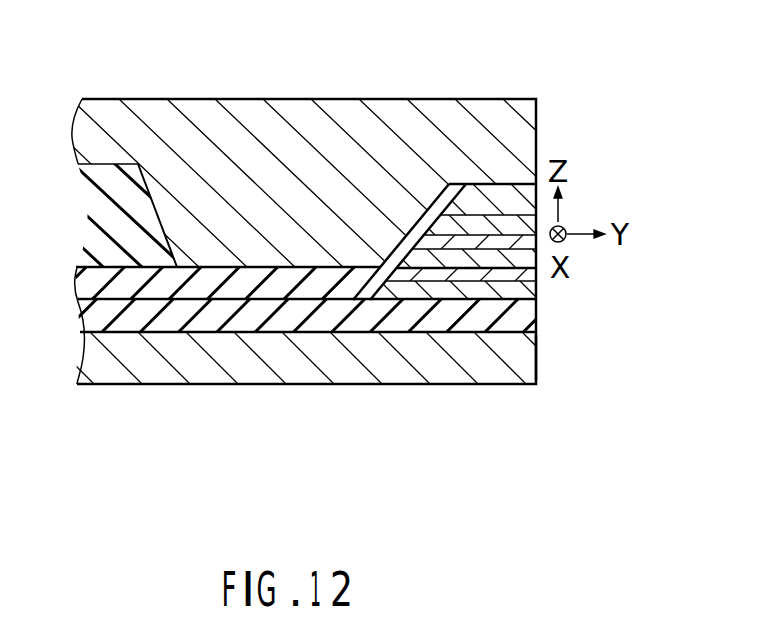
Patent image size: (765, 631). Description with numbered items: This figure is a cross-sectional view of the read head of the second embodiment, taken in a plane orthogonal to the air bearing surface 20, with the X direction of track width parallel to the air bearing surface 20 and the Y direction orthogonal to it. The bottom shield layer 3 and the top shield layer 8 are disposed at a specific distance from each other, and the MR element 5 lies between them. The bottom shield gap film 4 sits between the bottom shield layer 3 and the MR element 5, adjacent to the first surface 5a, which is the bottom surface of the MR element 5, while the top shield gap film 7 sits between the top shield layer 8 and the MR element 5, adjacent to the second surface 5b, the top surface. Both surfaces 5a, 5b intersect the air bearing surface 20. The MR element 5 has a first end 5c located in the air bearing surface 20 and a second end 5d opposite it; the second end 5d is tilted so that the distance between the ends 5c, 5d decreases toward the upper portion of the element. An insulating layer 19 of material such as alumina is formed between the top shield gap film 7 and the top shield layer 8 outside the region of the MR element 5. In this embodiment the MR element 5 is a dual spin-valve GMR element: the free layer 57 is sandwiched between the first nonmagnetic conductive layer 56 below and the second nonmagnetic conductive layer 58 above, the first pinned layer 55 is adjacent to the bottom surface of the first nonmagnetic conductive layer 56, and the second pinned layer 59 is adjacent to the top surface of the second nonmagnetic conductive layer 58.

The bottom shield layer 3 is at (142, 368).
The bottom shield gap film 4 is at (207, 326).
The MR element 5 is at (492, 213).
The first surface 5a is at (536, 352).
The second surface 5b is at (510, 215).
The first end 5c is at (538, 288).
The second end 5d is at (365, 222).
The top shield gap film 7 is at (207, 272).
The top shield layer 8 is at (263, 100).
The insulating layer 19 is at (105, 170).
The air bearing surface 20 is at (537, 127).
The first pinned layer 55 is at (389, 291).
The first nonmagnetic conductive layer 56 is at (430, 276).
The free layer 57 is at (481, 260).
The second nonmagnetic conductive layer 58 is at (410, 228).
The second pinned layer 59 is at (466, 225).